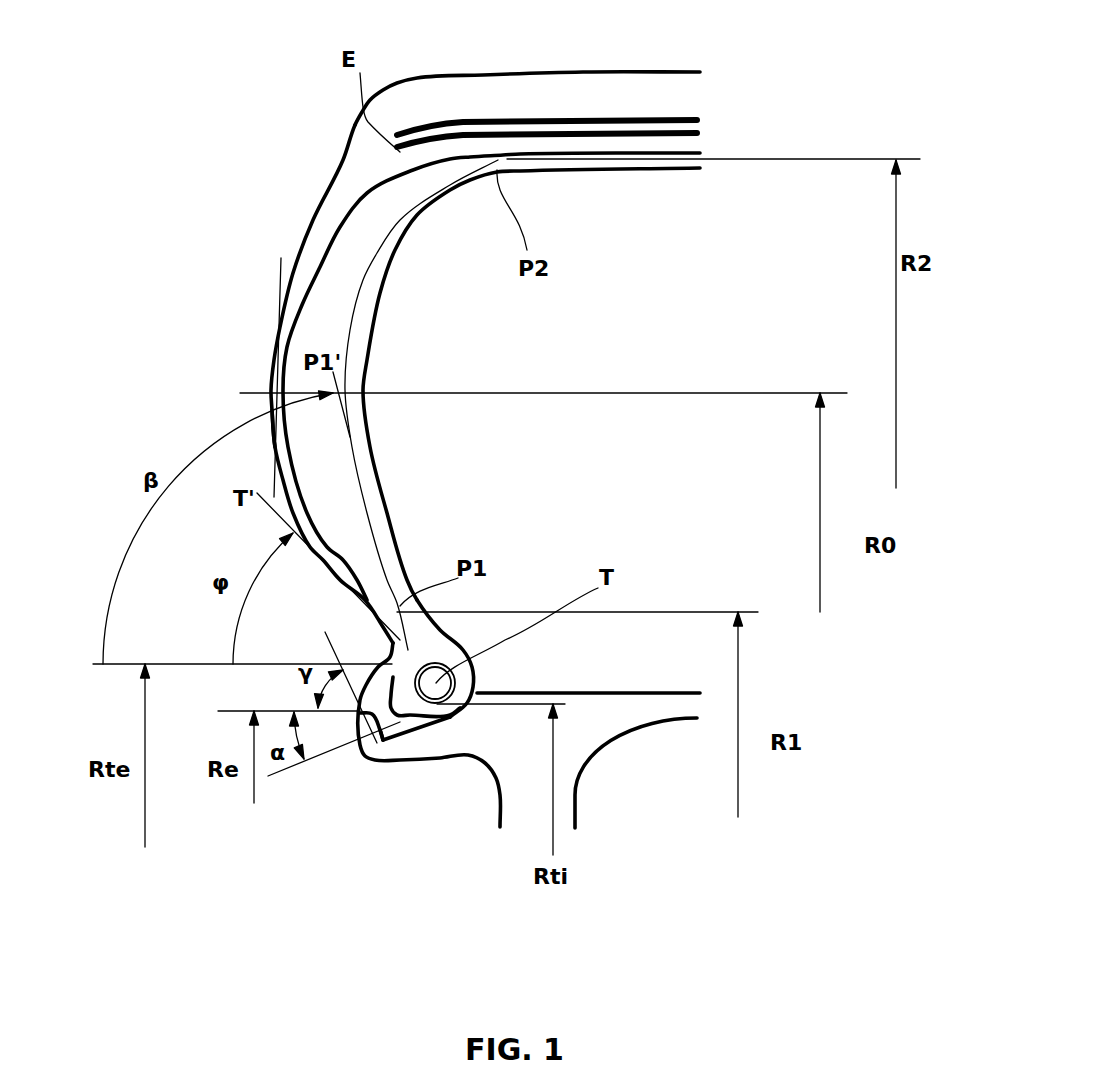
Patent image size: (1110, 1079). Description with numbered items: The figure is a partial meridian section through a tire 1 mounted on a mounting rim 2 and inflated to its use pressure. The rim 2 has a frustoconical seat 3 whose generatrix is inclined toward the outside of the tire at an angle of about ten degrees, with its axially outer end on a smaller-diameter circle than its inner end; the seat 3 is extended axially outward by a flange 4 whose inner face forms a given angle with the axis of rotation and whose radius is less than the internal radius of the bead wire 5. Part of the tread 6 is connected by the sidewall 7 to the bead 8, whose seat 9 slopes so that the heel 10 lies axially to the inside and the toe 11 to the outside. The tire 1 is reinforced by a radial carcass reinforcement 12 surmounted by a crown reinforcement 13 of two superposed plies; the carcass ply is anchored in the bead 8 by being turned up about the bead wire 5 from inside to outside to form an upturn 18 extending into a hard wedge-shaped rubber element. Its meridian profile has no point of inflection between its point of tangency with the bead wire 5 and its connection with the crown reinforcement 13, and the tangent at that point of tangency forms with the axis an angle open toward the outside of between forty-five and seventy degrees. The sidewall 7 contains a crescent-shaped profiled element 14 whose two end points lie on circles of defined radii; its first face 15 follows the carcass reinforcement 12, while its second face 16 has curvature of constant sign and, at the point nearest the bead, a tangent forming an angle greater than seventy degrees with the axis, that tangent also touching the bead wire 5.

The tire 1 is at (236, 152).
The mounting rim 2 is at (542, 785).
The frustoconical seat 3 is at (410, 745).
The flange 4 is at (383, 722).
The bead wire 5 is at (473, 667).
The tread 6 is at (633, 88).
The sidewall 7 is at (363, 318).
The bead 8 is at (417, 653).
The bead seat 9 is at (440, 722).
The heel 10 is at (478, 684).
The toe 11 is at (376, 741).
The radial carcass reinforcement 12 is at (277, 353).
The crown reinforcement 13 is at (680, 127).
The profiled element 14 is at (315, 310).
The first face 15 is at (333, 393).
The second face 16 is at (345, 352).
The upturn 18 is at (391, 677).